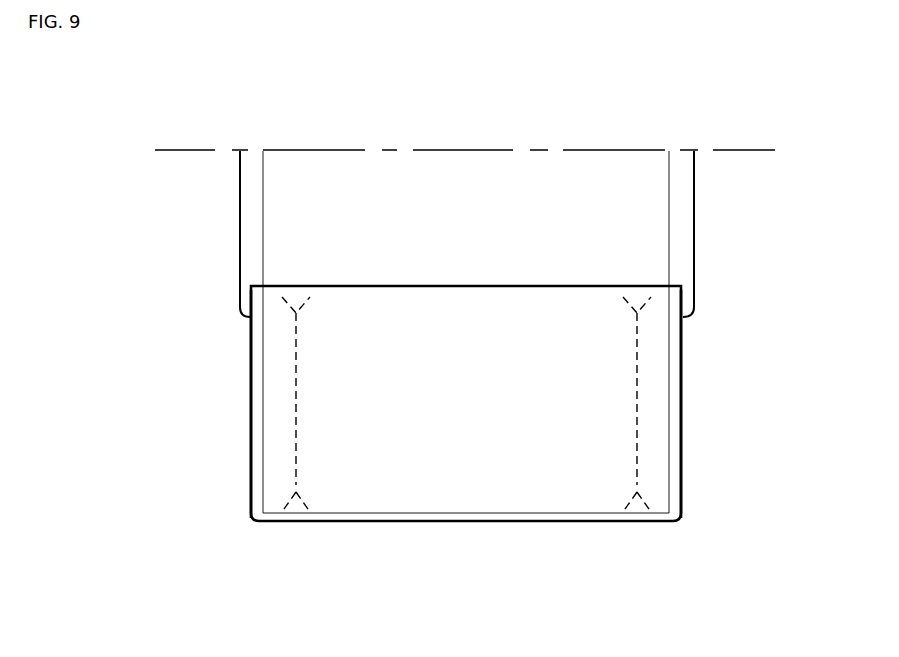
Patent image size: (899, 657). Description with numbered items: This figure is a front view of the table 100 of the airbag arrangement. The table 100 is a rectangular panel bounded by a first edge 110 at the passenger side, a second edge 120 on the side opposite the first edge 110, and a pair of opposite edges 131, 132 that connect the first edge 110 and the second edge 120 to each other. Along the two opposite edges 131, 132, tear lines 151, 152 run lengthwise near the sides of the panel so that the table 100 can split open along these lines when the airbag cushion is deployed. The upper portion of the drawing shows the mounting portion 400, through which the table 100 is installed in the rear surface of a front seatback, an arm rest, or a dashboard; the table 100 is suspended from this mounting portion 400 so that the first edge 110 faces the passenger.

The table 100 is at (148, 118).
The first edge 110 is at (465, 523).
The second edge 120 is at (459, 286).
The opposite edge 131 is at (681, 470).
The opposite edge 132 is at (251, 420).
The tear line 151 is at (637, 392).
The tear line 152 is at (296, 362).
The mounting portion 400 is at (687, 216).